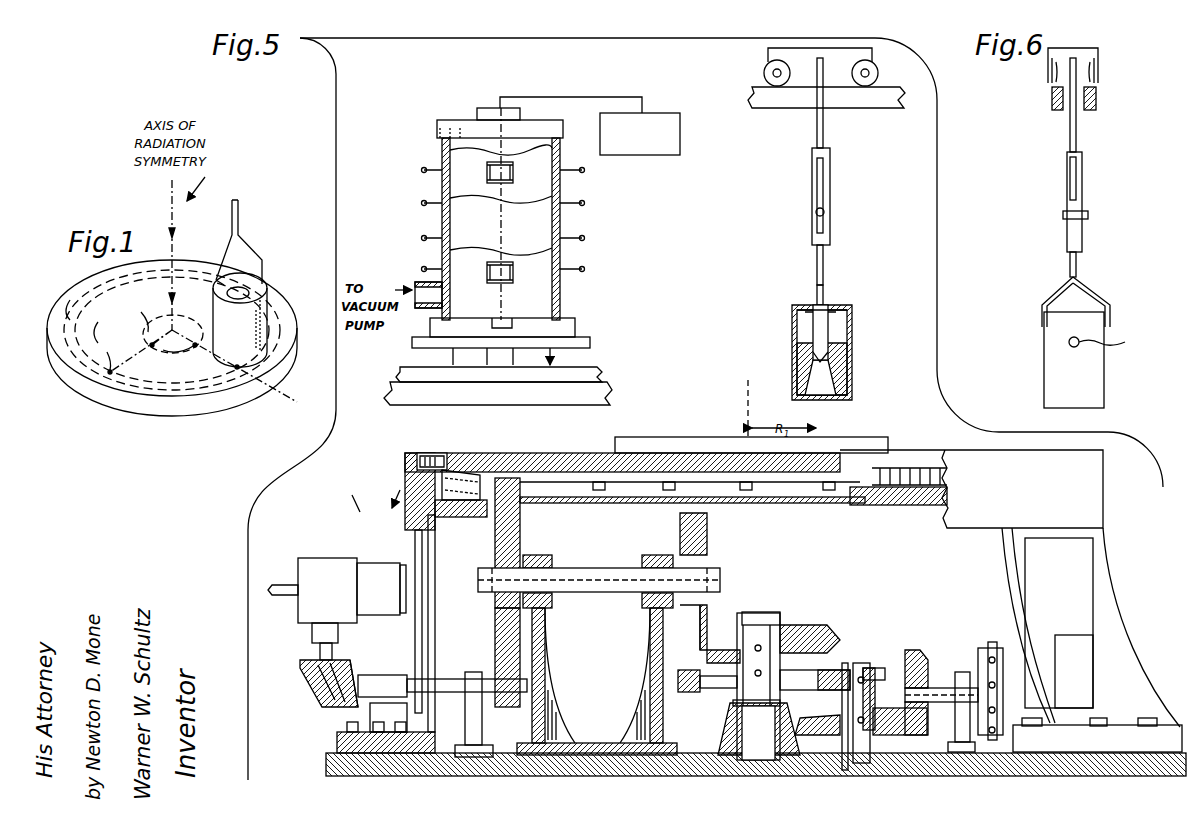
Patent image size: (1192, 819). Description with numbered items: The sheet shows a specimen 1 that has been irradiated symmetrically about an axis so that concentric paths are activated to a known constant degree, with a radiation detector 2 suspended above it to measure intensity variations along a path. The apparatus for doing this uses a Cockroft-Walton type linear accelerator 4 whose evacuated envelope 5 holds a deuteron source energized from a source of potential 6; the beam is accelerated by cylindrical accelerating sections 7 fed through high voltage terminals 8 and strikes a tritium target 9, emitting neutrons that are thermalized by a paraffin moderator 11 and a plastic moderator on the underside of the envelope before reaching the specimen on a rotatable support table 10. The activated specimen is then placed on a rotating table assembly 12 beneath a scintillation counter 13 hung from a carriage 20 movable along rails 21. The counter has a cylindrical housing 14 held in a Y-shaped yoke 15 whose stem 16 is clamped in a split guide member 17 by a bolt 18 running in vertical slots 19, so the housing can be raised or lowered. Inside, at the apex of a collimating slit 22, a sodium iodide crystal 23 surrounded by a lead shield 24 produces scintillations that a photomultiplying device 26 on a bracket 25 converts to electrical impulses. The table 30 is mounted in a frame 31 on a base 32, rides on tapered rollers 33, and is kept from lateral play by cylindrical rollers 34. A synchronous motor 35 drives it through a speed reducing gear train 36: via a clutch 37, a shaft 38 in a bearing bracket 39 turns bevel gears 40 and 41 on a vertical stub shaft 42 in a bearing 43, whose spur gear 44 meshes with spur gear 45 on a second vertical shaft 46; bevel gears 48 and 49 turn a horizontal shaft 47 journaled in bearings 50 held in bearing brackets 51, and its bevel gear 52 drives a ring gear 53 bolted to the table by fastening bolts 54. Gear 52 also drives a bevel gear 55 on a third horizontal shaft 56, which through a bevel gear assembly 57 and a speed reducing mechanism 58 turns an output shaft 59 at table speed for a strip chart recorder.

In FIG. 1, the specimen 1 is at (140, 408).
In FIG. 5, the specimen 1 is at (600, 372).
In FIG. 1, the radiation detector 2 is at (258, 296).
In FIG. 5, the linear accelerator 4 is at (616, 248).
In FIG. 5, the evacuated envelope 5 is at (560, 300).
In FIG. 5, the source of potential 6 is at (660, 112).
In FIG. 5, the cylindrical accelerating sections 7 is at (513, 178).
In FIG. 5, the high voltage terminals 8 is at (421, 202).
In FIG. 5, the tritium target 9 is at (505, 320).
In FIG. 5, the support member or table 10 is at (610, 395).
In FIG. 5, the paraffin moderator 11 is at (575, 332).
In FIG. 5, the rotating table assembly 12 is at (382, 485).
In FIG. 5, the radiation detecting scintillation counter 13 is at (830, 357).
In FIG. 5, the cylindrical housing 14 is at (852, 386).
In FIG. 6, the cylindrical housing 14 is at (1104, 380).
In FIG. 5, the Y-shaped yoke 15 is at (817, 280).
In FIG. 6, the Y-shaped yoke 15 is at (1098, 298).
In FIG. 5, the stem portion 16 is at (823, 258).
In FIG. 6, the stem portion 16 is at (1070, 268).
In FIG. 5, the split guide member 17 is at (830, 153).
In FIG. 6, the split guide member 17 is at (1082, 174).
In FIG. 5, the bolt 18 is at (816, 213).
In FIG. 6, the bolt 18 is at (1088, 214).
In FIG. 5, the vertically extending slots 19 is at (823, 185).
In FIG. 5, the carriage 20 is at (770, 52).
In FIG. 6, the carriage 20 is at (1085, 50).
In FIG. 5, the rails 21 is at (888, 100).
In FIG. 6, the rails 21 is at (1052, 98).
In FIG. 5, the collimating slit 22 is at (840, 406).
In FIG. 5, the thallium activated sodium iodide scintillating crystal 23 is at (800, 370).
In FIG. 5, the lead shield 24 is at (802, 392).
In FIG. 5, the bracket 25 is at (842, 318).
In FIG. 5, the photomultiplying device 26 is at (813, 338).
In FIG. 5, the rotating table 30 is at (520, 455).
In FIG. 5, the frame 31 is at (1090, 508).
In FIG. 5, the base 32 is at (1148, 776).
In FIG. 5, the tapered rollers 33 is at (462, 502).
In FIG. 5, the cylindrical rollers 34 is at (431, 455).
In FIG. 5, the constant speed synchronous motor 35 is at (1062, 640).
In FIG. 5, the speed reducing gear train 36 is at (814, 563).
In FIG. 5, the disengaging clutch mechanism 37 is at (990, 648).
In FIG. 5, the shaft 38 is at (935, 688).
In FIG. 5, the bearing bracket 39 is at (952, 715).
In FIG. 5, the bevel gear 40 is at (914, 652).
In FIG. 5, the bevel gear 41 is at (812, 718).
In FIG. 5, the vertical stub shaft 42 is at (873, 668).
In FIG. 5, the bearing 43 is at (845, 772).
In FIG. 5, the spur gear 44 is at (858, 668).
In FIG. 5, the spur gear 45 is at (690, 692).
In FIG. 5, the second vertical shaft 46 is at (755, 625).
In FIG. 5, the horizontal shaft 47 is at (605, 582).
In FIG. 5, the bevel gear 48 is at (805, 625).
In FIG. 5, the bevel gear 49 is at (708, 525).
In FIG. 5, the bearings 50 is at (552, 562).
In FIG. 5, the bearing brackets 51 is at (556, 668).
In FIG. 5, the bevel gear 52 is at (512, 548).
In FIG. 5, the ring gear 53 is at (600, 504).
In FIG. 5, the fastening bolts 54 is at (675, 486).
In FIG. 5, the bevel gear 55 is at (506, 700).
In FIG. 5, the third horizontal shaft 56 is at (446, 679).
In FIG. 5, the bevel gear assembly 57 is at (322, 706).
In FIG. 5, the speed reducing mechanism 58 is at (335, 558).
In FIG. 5, the output shaft 59 is at (278, 585).